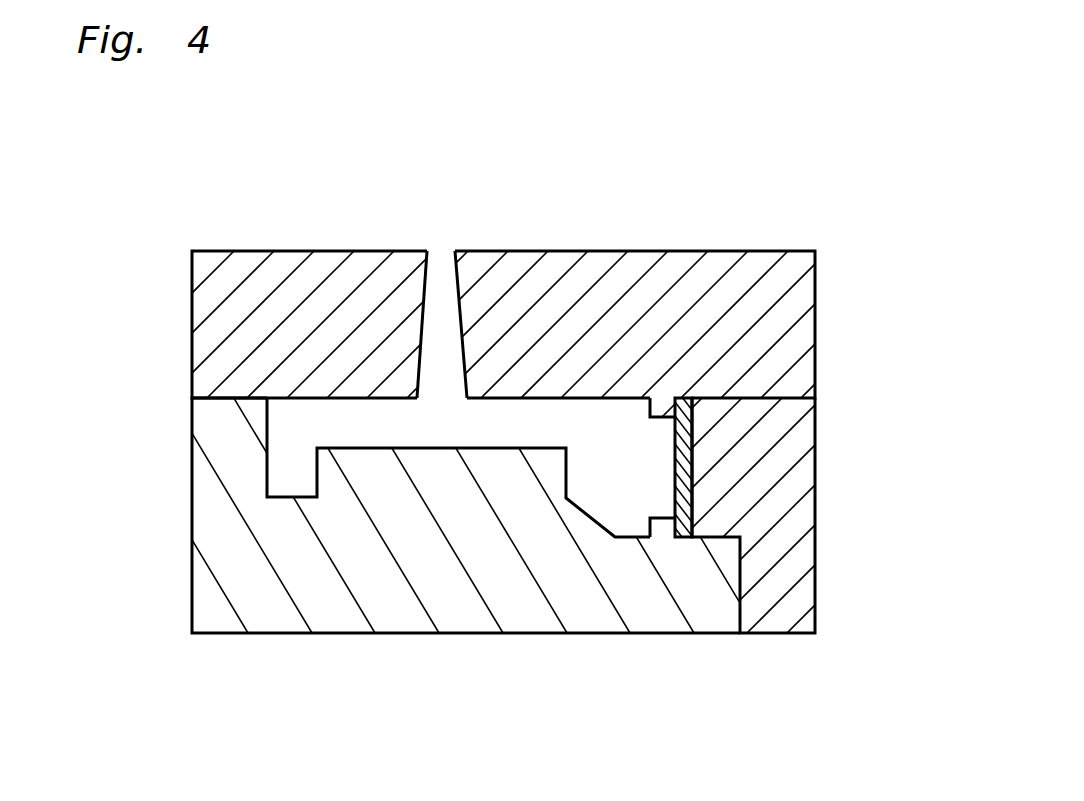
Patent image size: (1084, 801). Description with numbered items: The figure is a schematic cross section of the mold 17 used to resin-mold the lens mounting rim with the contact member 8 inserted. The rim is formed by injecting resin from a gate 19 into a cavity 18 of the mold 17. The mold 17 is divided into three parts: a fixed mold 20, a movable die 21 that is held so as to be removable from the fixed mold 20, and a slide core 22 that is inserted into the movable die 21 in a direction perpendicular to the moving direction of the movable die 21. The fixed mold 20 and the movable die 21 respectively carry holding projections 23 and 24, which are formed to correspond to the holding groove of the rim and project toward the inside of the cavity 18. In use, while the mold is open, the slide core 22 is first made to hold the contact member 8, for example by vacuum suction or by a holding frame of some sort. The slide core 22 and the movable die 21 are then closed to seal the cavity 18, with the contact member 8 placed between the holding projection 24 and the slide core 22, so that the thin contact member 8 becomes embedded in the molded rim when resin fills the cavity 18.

The mold 17 is at (228, 224).
The gate 19 is at (445, 313).
The fixed mold 20 is at (547, 248).
The cavity 18 is at (623, 459).
The movable die 21 is at (397, 636).
The slide core 22 is at (822, 562).
The contact member 8 is at (693, 465).
The holding projection 23 is at (665, 518).
The holding projection 24 is at (667, 421).